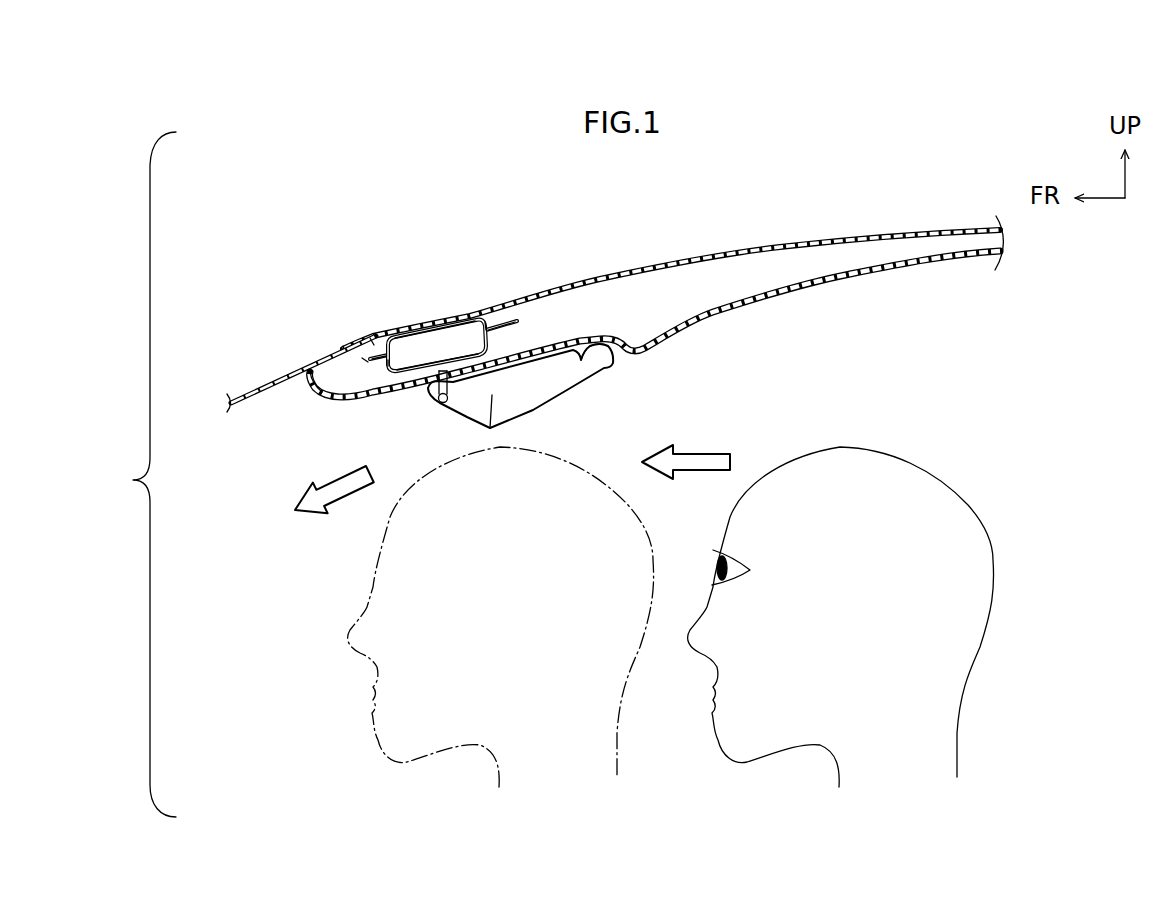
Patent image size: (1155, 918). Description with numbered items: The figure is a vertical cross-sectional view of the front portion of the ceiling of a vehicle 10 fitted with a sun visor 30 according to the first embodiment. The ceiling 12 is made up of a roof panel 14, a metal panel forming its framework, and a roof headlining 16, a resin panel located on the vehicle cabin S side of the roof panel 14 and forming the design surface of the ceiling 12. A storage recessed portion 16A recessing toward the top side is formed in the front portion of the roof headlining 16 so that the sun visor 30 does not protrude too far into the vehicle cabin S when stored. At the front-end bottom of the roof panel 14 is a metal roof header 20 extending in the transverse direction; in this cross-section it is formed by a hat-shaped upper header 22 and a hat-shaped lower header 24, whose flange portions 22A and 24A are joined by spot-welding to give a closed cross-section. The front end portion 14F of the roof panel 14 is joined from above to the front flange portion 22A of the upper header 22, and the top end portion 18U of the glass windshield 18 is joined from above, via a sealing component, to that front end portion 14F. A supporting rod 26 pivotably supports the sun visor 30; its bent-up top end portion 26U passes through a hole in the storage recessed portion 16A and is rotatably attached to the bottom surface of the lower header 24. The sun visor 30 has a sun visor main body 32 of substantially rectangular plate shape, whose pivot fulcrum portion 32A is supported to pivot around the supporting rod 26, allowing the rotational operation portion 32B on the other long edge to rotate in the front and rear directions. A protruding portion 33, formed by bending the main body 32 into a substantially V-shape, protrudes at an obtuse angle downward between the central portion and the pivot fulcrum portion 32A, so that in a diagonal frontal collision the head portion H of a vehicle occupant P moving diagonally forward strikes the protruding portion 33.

The vehicle 10 is at (667, 241).
The ceiling 12 is at (667, 242).
The roof panel 14 is at (667, 242).
The front end portion of the roof panel 14F is at (351, 348).
The roof headlining 16 is at (655, 356).
The storage recessed portion 16A is at (407, 392).
The glass windshield 18 is at (322, 323).
The top end portion of the glass windshield 18U is at (369, 340).
The roof header 20 is at (362, 362).
The upper header 22 is at (412, 295).
The flange portion of the upper header 22A is at (345, 356).
The lower header 24 is at (447, 363).
The flange portion of the lower header 24A is at (517, 322).
The supporting rod 26 is at (448, 393).
The top end portion of the supporting rod 26U is at (441, 368).
The sun visor 30 is at (563, 440).
The sun visor main body 32 is at (563, 440).
The pivot fulcrum portion 32A is at (424, 390).
The rotational operation portion 32B is at (610, 364).
The protruding portion 33 is at (494, 430).
The vehicle cabin S is at (909, 369).
The head portion H is at (913, 481).
The vehicle occupant P is at (994, 553).